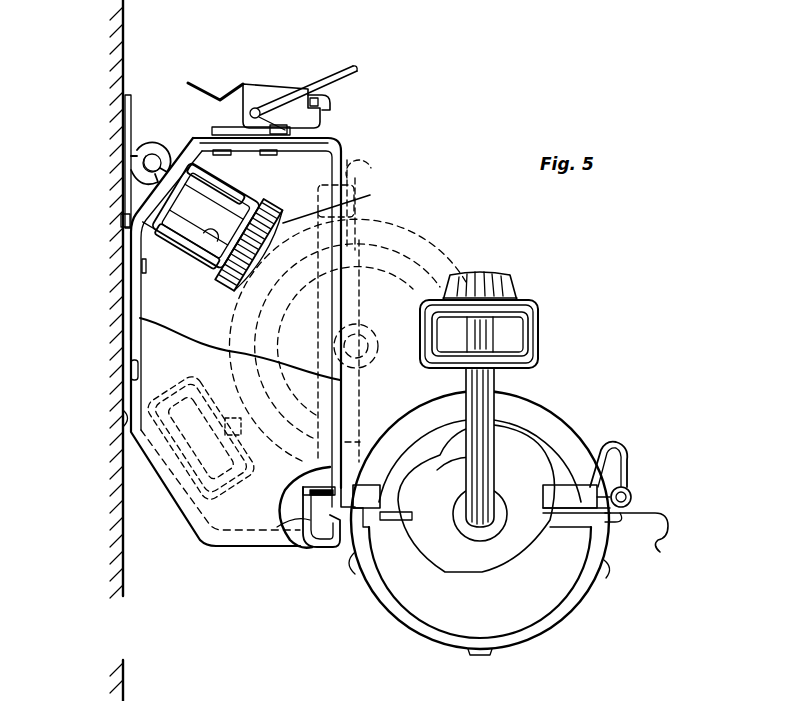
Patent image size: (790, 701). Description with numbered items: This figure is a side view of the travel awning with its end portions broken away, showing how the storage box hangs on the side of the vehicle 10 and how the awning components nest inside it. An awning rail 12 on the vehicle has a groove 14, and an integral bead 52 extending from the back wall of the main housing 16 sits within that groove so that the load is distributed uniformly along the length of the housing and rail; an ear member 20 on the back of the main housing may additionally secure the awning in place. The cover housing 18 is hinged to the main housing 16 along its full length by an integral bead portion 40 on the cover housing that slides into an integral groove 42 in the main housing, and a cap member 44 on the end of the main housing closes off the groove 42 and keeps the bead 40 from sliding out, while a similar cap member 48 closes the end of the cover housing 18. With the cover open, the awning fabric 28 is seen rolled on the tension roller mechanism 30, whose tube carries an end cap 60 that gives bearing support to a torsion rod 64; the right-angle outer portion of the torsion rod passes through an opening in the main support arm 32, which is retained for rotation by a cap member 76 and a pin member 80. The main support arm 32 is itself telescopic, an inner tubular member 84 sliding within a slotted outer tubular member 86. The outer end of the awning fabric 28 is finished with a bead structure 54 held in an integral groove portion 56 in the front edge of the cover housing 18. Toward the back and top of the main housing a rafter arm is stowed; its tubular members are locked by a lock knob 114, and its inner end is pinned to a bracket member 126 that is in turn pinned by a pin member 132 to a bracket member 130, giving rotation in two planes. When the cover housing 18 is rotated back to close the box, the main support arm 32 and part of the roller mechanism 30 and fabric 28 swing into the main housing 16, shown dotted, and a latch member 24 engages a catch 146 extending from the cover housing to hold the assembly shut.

The vehicle 10 is at (112, 48).
The awning rail 12 is at (122, 226).
The groove 14 is at (156, 149).
The main housing 16 is at (338, 147).
The cover housing 18 is at (514, 632).
The ear member 20 is at (128, 321).
The latch member 24 is at (280, 92).
The awning fabric 28 is at (604, 446).
The tension roller mechanism 30 is at (512, 462).
The main support arm 32 is at (538, 366).
The bead portion 40 is at (300, 496).
The groove 42 is at (300, 527).
The cap member 44 is at (228, 528).
The cap member 48 is at (462, 615).
The integral bead 52 is at (140, 172).
The bead structure 54 is at (632, 492).
The groove portion 56 is at (642, 506).
The end cap 60 is at (516, 562).
The torsion rod 64 is at (466, 499).
The cap member 76 is at (490, 288).
The pin member 80 is at (495, 382).
The inner tubular member 84 is at (527, 338).
The outer tubular member 86 is at (525, 308).
The lock knob 114 is at (345, 204).
The bracket member 126 is at (153, 232).
The bracket member 130 is at (210, 178).
The pin member 132 is at (208, 272).
The catch 146 is at (655, 546).